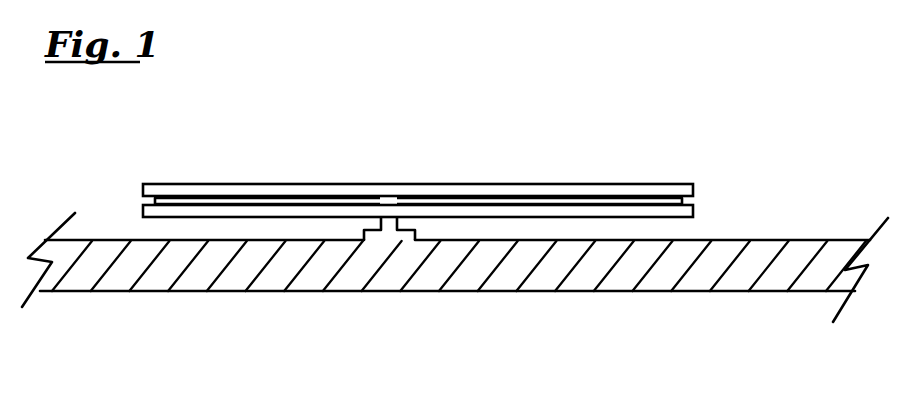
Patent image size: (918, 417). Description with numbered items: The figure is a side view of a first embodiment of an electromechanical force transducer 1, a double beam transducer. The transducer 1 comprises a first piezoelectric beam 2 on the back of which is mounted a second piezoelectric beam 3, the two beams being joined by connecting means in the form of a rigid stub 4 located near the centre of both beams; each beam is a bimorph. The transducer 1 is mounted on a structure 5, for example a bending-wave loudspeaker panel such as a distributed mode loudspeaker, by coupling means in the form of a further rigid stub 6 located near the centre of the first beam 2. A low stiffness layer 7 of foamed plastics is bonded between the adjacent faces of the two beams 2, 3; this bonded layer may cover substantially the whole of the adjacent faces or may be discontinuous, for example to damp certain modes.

The transducer 1 is at (365, 150).
The first piezoelectric beam 2 is at (593, 216).
The second piezoelectric beam 3 is at (460, 183).
The rigid stub 4 is at (386, 199).
The structure 5 is at (612, 291).
The rigid stub 6 is at (384, 226).
The low stiffness layer 7 is at (240, 198).